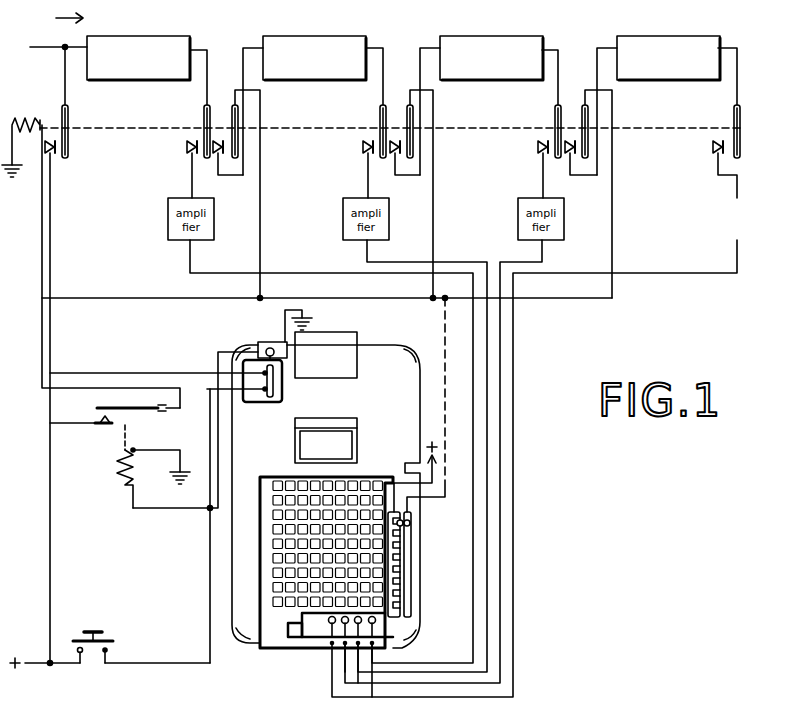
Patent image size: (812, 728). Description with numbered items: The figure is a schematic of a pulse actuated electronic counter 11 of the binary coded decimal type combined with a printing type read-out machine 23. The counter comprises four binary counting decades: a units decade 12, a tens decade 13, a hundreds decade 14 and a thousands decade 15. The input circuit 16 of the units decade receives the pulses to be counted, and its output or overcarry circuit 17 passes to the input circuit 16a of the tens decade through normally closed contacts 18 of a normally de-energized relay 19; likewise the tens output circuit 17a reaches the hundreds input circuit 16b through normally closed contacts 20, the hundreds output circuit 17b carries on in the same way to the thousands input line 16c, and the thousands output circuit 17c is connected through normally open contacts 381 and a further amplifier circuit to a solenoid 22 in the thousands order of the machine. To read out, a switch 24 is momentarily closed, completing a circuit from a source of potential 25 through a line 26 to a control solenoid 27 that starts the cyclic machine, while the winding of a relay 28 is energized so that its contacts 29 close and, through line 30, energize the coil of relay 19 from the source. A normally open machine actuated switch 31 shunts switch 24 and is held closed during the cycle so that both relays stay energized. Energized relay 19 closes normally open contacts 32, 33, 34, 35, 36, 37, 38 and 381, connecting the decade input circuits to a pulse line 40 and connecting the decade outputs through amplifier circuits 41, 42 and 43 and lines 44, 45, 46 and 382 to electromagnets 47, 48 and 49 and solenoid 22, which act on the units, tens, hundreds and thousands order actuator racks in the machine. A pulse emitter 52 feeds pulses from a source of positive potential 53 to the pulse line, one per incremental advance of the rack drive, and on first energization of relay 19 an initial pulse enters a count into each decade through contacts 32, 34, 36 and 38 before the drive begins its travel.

The electronic counter 11 is at (58, 17).
The units counter decade 12 is at (158, 37).
The tens counter decade 13 is at (312, 37).
The hundreds counter decade 14 is at (480, 37).
The thousands counter decade 15 is at (661, 37).
The input circuit 16 is at (46, 51).
The input circuit 16a is at (247, 47).
The input circuit 16b is at (430, 47).
The input line 16c is at (605, 47).
The output circuit 17 is at (207, 50).
The output circuit 17a is at (383, 48).
The output circuit 17b is at (560, 51).
The output circuit 17c is at (737, 48).
The normally closed contacts 18 is at (218, 158).
The relay 19 is at (36, 118).
The normally closed contacts 20 is at (395, 158).
The solenoid 22 is at (330, 630).
The printing type read-out machine 23 is at (257, 548).
The switch 24 is at (94, 630).
The source of potential 25 is at (34, 666).
The line 26 is at (222, 436).
The control solenoid 27 is at (271, 347).
The relay 28 is at (125, 488).
The contacts 29 is at (97, 410).
The line 30 is at (44, 342).
The machine actuated switch 31 is at (284, 390).
The normally open contacts 32 is at (54, 158).
The normally open contacts 33 is at (196, 142).
The normally open contacts 34 is at (232, 112).
The normally open contacts 35 is at (372, 142).
The normally open contacts 36 is at (407, 112).
The normally open contacts 37 is at (547, 142).
The normally open contacts 38 is at (582, 112).
The normally open contacts 381 is at (728, 156).
The line 382 is at (514, 494).
The pulse line 40 is at (528, 300).
The amplifier circuit 41 is at (168, 225).
The amplifier circuit 42 is at (343, 225).
The amplifier circuit 43 is at (373, 425).
The line 44 is at (472, 565).
The line 45 is at (486, 585).
The line 46 is at (499, 606).
The electromagnet 47 is at (370, 630).
The electromagnet 48 is at (356, 630).
The electromagnet 49 is at (343, 630).
The pulse emitter 52 is at (399, 557).
The source of positive potential 53 is at (436, 470).